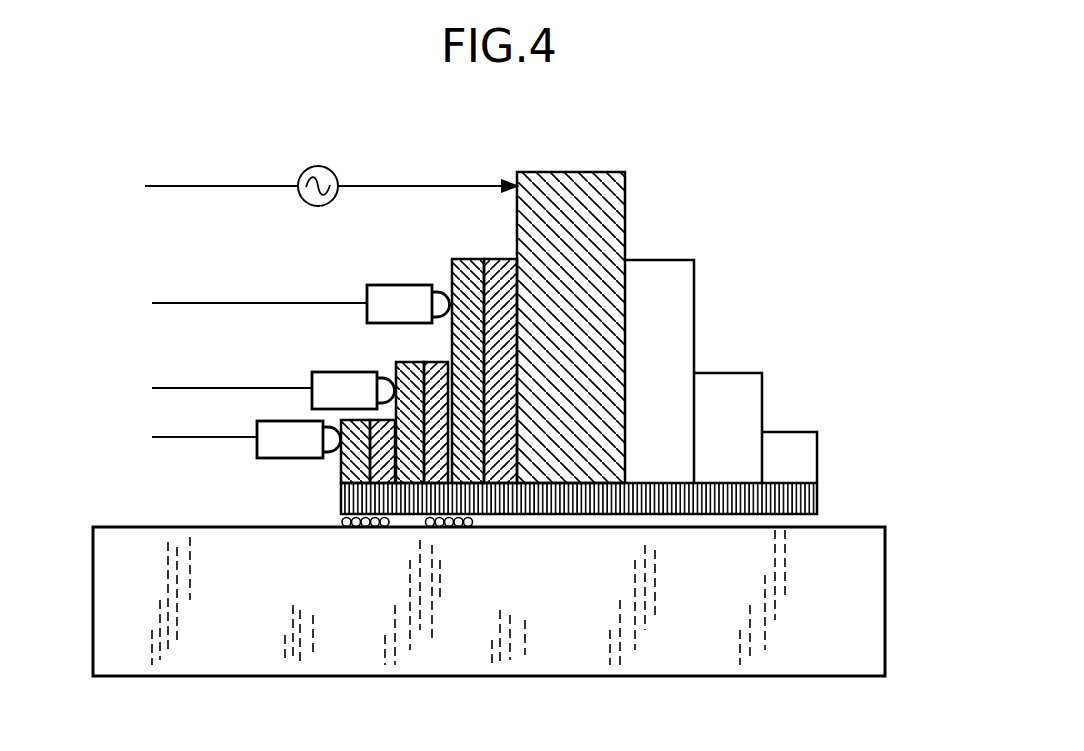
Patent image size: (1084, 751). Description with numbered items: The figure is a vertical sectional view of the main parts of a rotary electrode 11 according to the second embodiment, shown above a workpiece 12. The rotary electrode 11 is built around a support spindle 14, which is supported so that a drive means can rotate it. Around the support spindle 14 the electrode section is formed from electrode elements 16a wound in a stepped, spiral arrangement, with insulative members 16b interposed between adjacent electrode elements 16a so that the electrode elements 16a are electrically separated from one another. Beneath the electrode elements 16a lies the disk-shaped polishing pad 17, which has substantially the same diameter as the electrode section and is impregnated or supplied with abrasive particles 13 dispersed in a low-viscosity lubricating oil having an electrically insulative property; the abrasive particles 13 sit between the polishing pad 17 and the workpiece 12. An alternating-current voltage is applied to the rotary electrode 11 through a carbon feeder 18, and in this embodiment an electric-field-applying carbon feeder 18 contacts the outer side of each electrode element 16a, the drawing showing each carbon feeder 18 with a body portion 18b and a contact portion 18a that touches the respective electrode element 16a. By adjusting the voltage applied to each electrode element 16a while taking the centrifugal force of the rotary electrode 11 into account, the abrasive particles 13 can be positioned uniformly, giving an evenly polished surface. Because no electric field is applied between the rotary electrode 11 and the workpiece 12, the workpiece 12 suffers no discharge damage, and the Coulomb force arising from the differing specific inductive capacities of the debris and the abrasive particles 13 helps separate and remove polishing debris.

The rotary electrode 11 is at (719, 323).
The workpiece 12 is at (755, 678).
The abrasive particles 13 is at (343, 521).
The support spindle 14 is at (617, 218).
The electrode elements 16a is at (467, 262).
The insulative members 16b is at (492, 260).
The polishing pad 17 is at (818, 507).
The carbon feeder 18 is at (413, 241).
The driving unit contact tip 18a is at (440, 292).
The driving unit body 18b is at (377, 284).